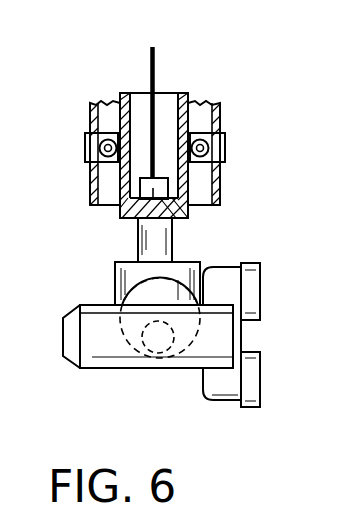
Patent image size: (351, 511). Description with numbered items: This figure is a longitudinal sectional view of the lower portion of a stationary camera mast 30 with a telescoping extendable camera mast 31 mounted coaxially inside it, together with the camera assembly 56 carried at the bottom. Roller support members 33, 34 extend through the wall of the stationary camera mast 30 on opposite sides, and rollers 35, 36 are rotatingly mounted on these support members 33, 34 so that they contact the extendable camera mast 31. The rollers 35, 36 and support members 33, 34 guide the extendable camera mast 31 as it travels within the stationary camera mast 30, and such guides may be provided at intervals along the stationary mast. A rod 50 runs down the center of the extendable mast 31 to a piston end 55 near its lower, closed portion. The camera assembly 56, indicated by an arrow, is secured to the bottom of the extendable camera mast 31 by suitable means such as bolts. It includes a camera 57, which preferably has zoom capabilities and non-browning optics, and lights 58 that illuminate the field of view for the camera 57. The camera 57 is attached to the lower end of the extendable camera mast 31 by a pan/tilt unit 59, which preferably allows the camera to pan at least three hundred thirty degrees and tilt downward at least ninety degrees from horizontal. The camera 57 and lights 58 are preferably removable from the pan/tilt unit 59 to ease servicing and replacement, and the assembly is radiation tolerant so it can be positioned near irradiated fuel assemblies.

The stationary camera mast 30 is at (218, 101).
The extendable camera mast 31 is at (185, 91).
The roller support member 33 is at (85, 140).
The roller support member 34 is at (225, 133).
The roller 35 is at (99, 155).
The roller 36 is at (209, 148).
The rod 50 is at (150, 67).
The piston end 55 is at (133, 221).
The camera assembly 56 is at (262, 255).
The camera 57 is at (188, 357).
The lights 58 is at (252, 291).
The pan/tilt unit 59 is at (140, 293).